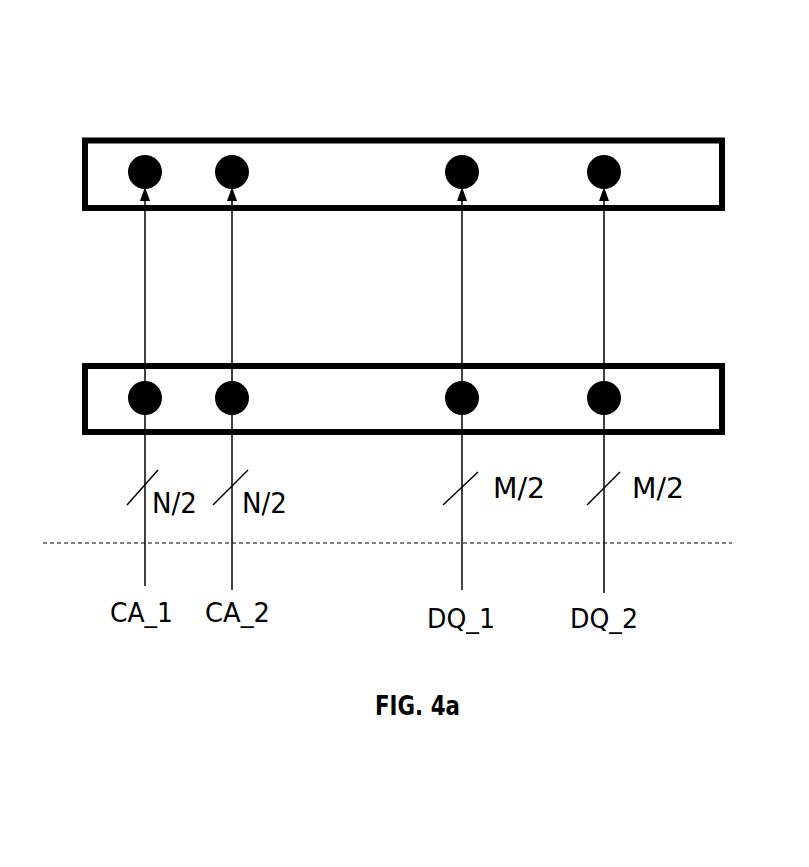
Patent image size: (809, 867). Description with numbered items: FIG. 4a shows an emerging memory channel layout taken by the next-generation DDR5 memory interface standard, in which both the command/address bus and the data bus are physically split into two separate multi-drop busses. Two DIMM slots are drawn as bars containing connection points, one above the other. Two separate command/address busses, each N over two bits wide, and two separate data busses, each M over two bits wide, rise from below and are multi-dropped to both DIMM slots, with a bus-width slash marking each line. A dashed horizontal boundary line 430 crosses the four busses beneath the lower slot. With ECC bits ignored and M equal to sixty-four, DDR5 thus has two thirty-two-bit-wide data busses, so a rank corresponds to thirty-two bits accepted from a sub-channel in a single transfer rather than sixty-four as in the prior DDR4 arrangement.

The boundary line 430 is at (421, 543).